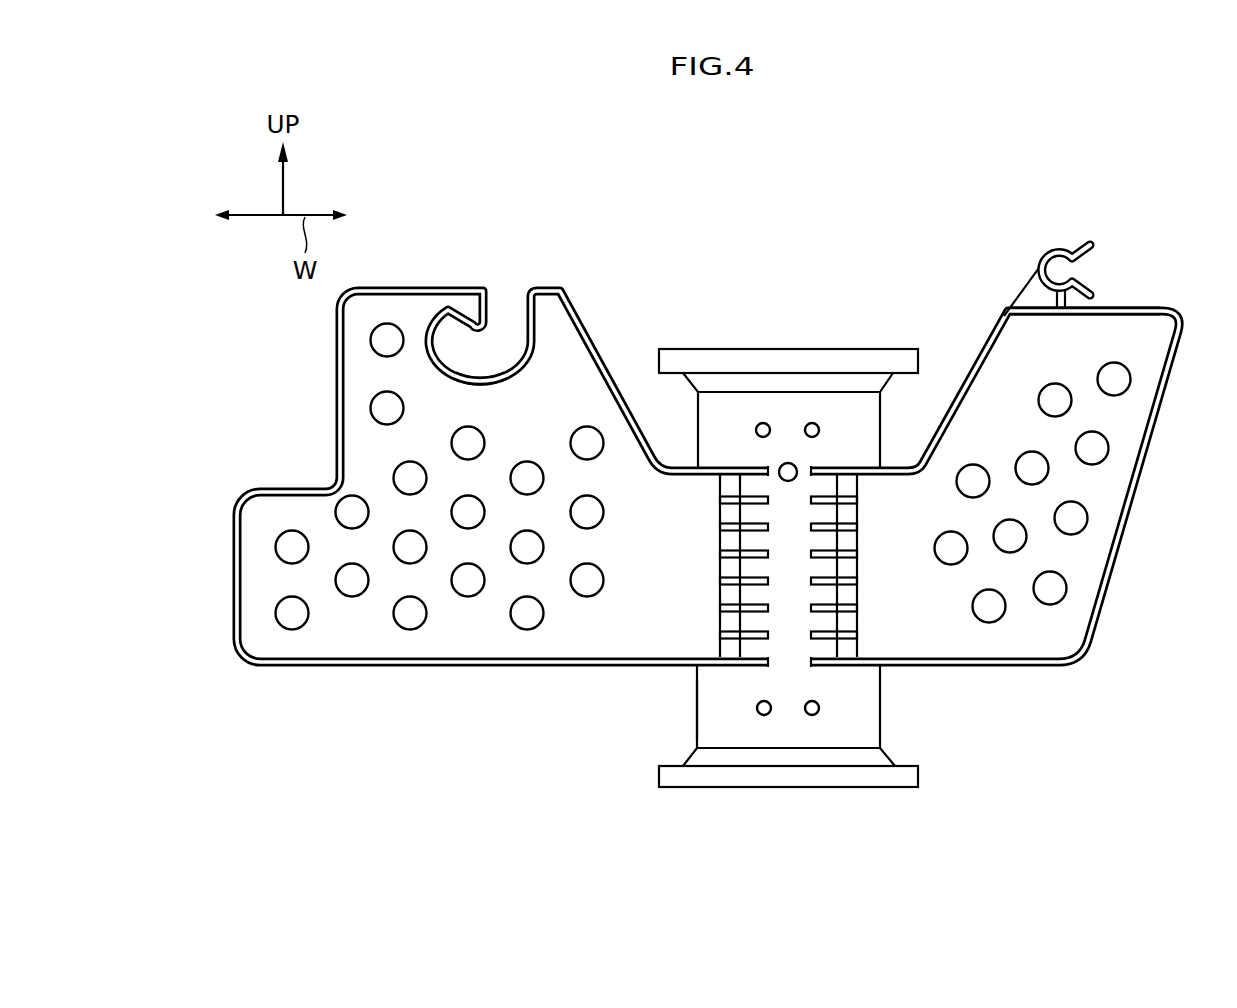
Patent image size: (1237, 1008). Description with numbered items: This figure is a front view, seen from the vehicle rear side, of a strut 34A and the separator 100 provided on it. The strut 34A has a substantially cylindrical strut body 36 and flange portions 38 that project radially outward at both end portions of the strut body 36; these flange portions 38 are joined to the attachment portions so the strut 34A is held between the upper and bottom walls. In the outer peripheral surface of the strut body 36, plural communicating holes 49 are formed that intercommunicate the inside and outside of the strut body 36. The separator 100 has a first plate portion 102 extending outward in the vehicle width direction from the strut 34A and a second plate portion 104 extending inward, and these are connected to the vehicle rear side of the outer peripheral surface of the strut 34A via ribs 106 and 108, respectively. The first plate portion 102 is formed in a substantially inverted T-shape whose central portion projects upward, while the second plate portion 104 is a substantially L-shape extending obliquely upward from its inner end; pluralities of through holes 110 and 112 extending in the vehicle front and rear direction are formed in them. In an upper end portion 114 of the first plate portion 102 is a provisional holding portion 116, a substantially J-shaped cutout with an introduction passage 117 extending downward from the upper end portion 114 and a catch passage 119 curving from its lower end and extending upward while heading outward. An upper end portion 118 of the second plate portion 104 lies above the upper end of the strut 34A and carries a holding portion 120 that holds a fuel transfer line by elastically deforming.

The strut 34A is at (694, 712).
The strut body 36 is at (865, 695).
The flange portions 38 is at (843, 357).
The communicating holes 49 is at (766, 712).
The separator 100 is at (701, 418).
The first plate portion 102 is at (257, 515).
The second plate portion 104 is at (1128, 480).
The rib 106 is at (738, 553).
The rib 108 is at (828, 553).
The through holes 110 is at (414, 615).
The through holes 112 is at (1055, 590).
The upper end portion 114 is at (410, 287).
The provisional holding portion 116 is at (514, 352).
The introduction passage 117 is at (527, 312).
The upper end portion 118 is at (1132, 306).
The catch passage 119 is at (450, 358).
The holding portion 120 is at (1055, 243).